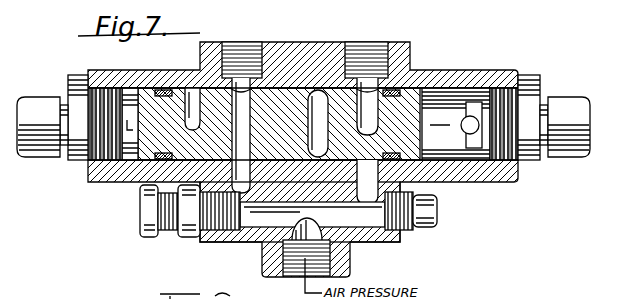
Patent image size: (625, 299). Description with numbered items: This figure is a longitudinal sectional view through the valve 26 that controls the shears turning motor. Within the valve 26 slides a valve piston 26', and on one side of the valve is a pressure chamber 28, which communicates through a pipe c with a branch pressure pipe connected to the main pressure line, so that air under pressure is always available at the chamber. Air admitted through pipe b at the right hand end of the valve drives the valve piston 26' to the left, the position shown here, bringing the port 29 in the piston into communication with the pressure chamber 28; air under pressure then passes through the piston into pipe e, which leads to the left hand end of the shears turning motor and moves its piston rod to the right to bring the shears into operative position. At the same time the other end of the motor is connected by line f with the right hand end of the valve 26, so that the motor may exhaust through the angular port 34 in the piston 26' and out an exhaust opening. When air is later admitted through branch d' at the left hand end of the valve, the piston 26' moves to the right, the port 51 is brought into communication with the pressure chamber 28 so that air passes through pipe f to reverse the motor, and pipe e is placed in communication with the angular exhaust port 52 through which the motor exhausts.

The valve 26 is at (303, 159).
The valve piston 26' is at (451, 124).
The pressure chamber 28 is at (367, 218).
The port 29 is at (246, 118).
The angular port 34 is at (367, 118).
The port 51 is at (318, 95).
The angular exhaust port 52 is at (193, 97).
The pipe b is at (472, 112).
The pipe c is at (308, 230).
The branch d' is at (107, 103).
The pipe e is at (243, 83).
The line f is at (367, 83).